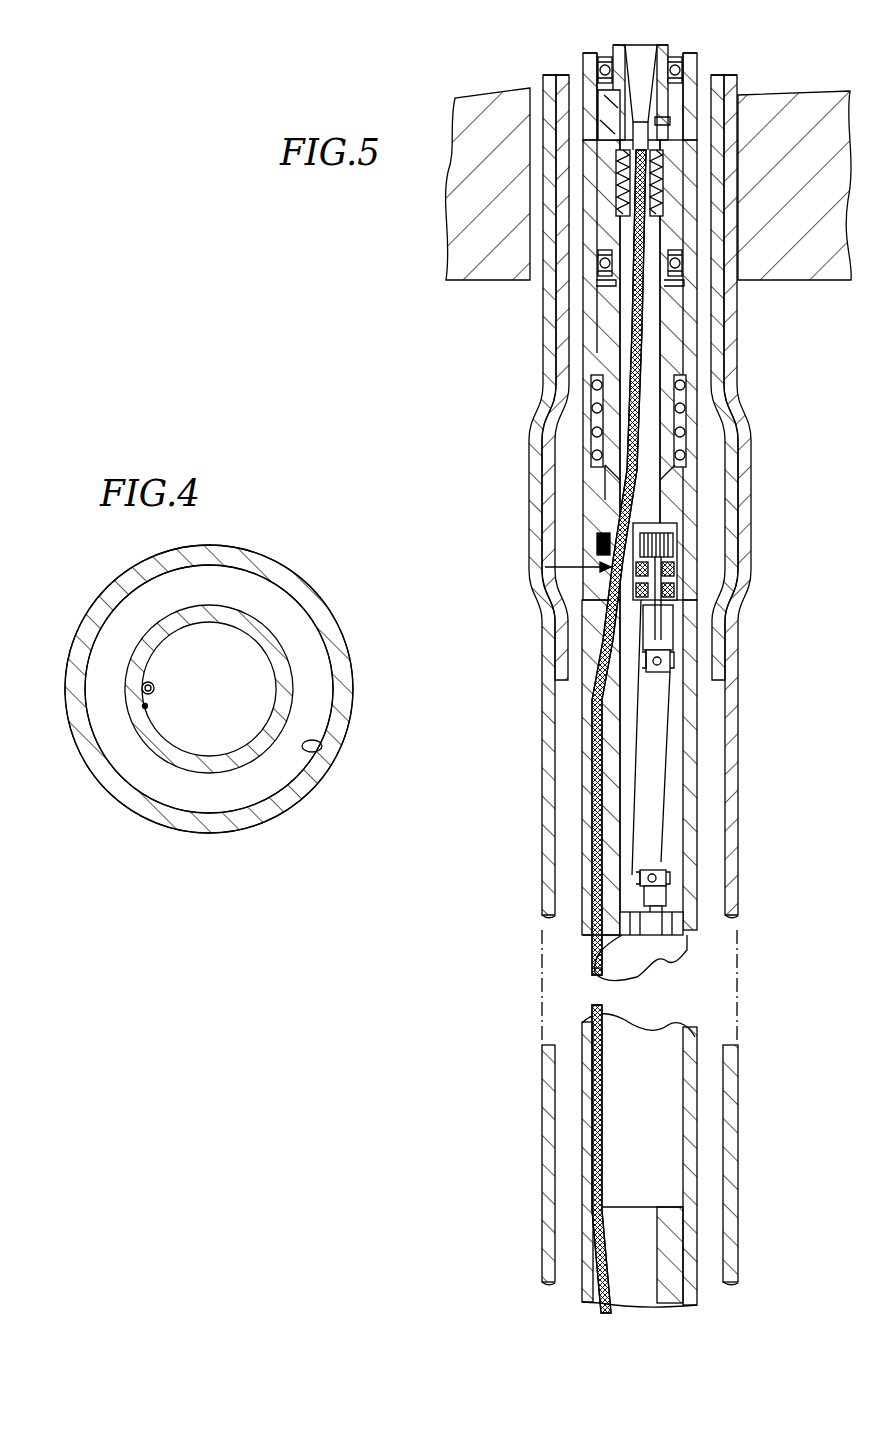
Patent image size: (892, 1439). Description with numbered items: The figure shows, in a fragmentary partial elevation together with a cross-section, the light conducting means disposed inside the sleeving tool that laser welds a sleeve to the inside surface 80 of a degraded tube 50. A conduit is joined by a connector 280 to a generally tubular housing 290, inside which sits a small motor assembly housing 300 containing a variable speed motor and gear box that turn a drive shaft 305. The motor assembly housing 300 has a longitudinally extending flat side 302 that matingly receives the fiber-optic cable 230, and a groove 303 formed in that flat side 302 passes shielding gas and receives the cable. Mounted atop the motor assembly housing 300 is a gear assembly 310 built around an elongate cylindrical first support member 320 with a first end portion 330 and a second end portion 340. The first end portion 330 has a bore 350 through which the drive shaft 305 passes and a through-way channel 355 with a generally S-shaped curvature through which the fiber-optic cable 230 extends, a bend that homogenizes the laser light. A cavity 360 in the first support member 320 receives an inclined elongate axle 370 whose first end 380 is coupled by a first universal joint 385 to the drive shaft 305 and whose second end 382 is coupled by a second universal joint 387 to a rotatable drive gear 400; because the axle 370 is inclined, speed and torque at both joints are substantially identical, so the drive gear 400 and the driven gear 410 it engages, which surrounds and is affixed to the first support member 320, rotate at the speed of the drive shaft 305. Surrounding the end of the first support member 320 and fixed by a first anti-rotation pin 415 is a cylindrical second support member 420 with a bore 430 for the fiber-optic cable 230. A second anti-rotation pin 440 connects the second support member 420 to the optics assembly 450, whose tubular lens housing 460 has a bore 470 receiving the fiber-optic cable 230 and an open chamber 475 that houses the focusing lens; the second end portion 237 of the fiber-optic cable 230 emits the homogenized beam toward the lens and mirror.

In FIG. 4, the tube 50 is at (296, 790).
In FIG. 5, the tube 50 is at (717, 85).
In FIG. 4, the inside surface of tube 80 is at (318, 748).
In FIG. 5, the inside surface of tube 80 is at (720, 232).
In FIG. 4, the fiber-optic cable 230 is at (142, 686).
In FIG. 5, the fiber-optic cable 230 is at (632, 406).
In FIG. 5, the second end portion 237 is at (658, 181).
In FIG. 5, the connector 280 is at (712, 1243).
In FIG. 4, the housing 290 is at (175, 818).
In FIG. 5, the housing 290 is at (588, 797).
In FIG. 4, the motor assembly housing 300 is at (258, 672).
In FIG. 5, the motor assembly housing 300 is at (682, 1026).
In FIG. 4, the flat side 302 is at (148, 707).
In FIG. 4, the groove 303 is at (152, 683).
In FIG. 5, the drive shaft 305 is at (638, 926).
In FIG. 5, the gear assembly 310 is at (553, 576).
In FIG. 5, the first support member 320 is at (612, 901).
In FIG. 5, the first end portion 330 is at (608, 856).
In FIG. 5, the second end portion 340 is at (625, 236).
In FIG. 5, the bore 350 is at (652, 937).
In FIG. 5, the through-way channel 355 is at (628, 482).
In FIG. 5, the cavity 360 is at (625, 746).
In FIG. 5, the axle 370 is at (655, 774).
In FIG. 5, the first end of axle 380 is at (650, 853).
In FIG. 5, the second end of axle 382 is at (663, 675).
In FIG. 5, the first universal joint 385 is at (666, 896).
In FIG. 5, the second universal joint 387 is at (668, 621).
In FIG. 5, the drive gear 400 is at (680, 546).
In FIG. 5, the driven gear 410 is at (598, 546).
In FIG. 5, the first anti-rotation pin 415 is at (678, 272).
In FIG. 5, the second support member 420 is at (604, 271).
In FIG. 5, the bore 430 is at (607, 101).
In FIG. 5, the second anti-rotation pin 440 is at (662, 121).
In FIG. 5, the optics assembly 450 is at (582, 47).
In FIG. 5, the lens housing 460 is at (614, 136).
In FIG. 5, the bore 470 is at (620, 173).
In FIG. 5, the open chamber 475 is at (641, 52).